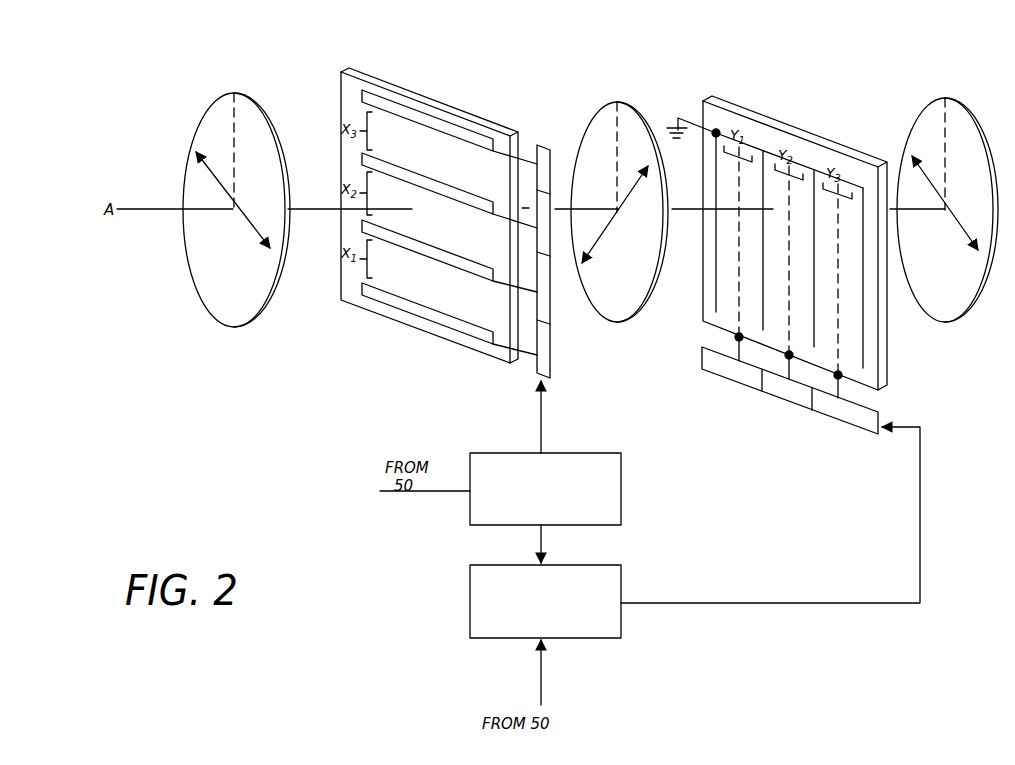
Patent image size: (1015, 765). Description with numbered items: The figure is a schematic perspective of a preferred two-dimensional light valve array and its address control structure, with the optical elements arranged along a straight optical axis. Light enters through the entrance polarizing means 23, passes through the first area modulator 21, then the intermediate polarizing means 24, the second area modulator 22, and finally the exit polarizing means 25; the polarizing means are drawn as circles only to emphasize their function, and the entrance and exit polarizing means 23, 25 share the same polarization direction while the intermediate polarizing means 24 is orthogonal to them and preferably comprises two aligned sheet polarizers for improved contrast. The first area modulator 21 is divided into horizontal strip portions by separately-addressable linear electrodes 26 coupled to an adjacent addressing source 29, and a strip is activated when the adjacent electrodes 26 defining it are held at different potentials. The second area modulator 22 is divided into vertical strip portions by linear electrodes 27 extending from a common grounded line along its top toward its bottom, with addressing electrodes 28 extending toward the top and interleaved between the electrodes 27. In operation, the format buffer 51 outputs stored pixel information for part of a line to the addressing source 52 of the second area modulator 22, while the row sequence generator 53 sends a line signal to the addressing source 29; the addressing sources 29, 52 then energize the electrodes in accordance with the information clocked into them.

The first area modulator 21 is at (390, 87).
The second area modulator 22 is at (812, 141).
The entrance polarizing means 23 is at (249, 99).
The intermediate polarizing means 24 is at (606, 104).
The exit polarizing means 25 is at (958, 99).
The linear electrodes 26 is at (435, 128).
The linear electrodes 27 is at (760, 272).
The addressing electrodes 28 is at (740, 341).
The addressing source 29 is at (560, 332).
The format buffer 51 is at (621, 638).
The addressing source 52 is at (768, 394).
The row sequence generator 53 is at (590, 453).